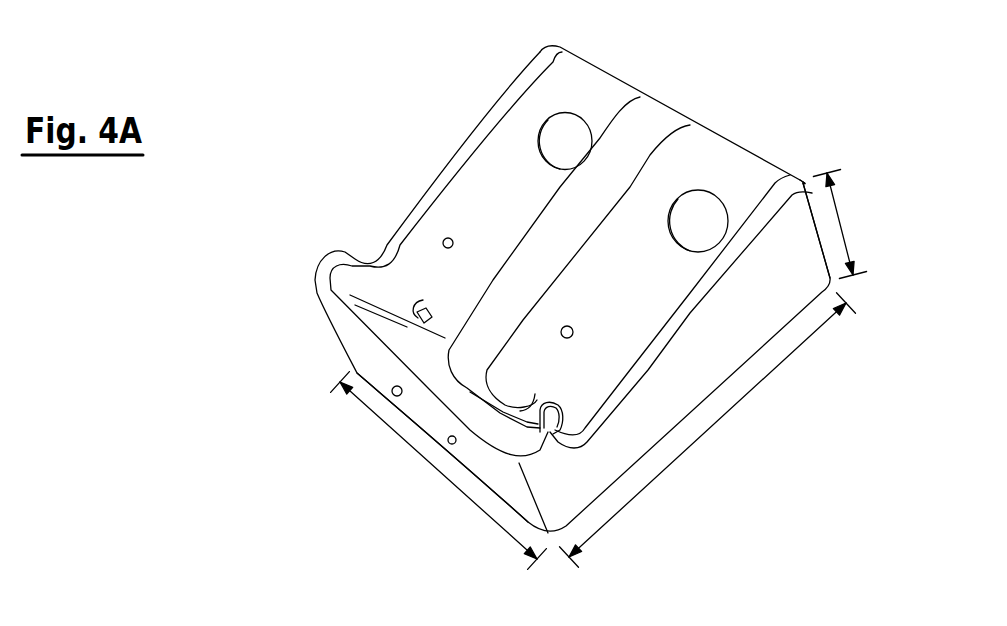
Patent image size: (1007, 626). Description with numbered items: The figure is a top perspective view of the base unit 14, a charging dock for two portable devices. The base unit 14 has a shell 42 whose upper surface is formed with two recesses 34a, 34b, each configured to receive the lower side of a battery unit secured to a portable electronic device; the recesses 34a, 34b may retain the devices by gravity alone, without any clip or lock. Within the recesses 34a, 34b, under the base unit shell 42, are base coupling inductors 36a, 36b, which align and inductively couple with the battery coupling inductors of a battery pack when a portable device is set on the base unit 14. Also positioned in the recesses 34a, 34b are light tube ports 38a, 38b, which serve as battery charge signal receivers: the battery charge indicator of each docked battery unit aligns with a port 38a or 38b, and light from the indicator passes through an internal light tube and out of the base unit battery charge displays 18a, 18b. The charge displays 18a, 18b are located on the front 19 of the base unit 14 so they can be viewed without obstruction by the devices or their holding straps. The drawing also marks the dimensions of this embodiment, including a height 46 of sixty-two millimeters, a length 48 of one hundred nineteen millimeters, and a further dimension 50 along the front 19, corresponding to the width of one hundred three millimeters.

The base unit 14 is at (322, 288).
The recess 34a is at (542, 92).
The recess 34b is at (702, 154).
The base coupling inductor 36a is at (565, 135).
The base coupling inductor 36b is at (697, 220).
The light tube port 38a is at (443, 240).
The light tube port 38b is at (561, 336).
The base unit battery charge display 18a is at (393, 393).
The base unit battery charge display 18b is at (448, 440).
The width dimension 50 is at (437, 469).
The front 19 is at (482, 468).
The base unit shell 42 is at (791, 176).
The height 46 is at (843, 232).
The length 48 is at (703, 436).